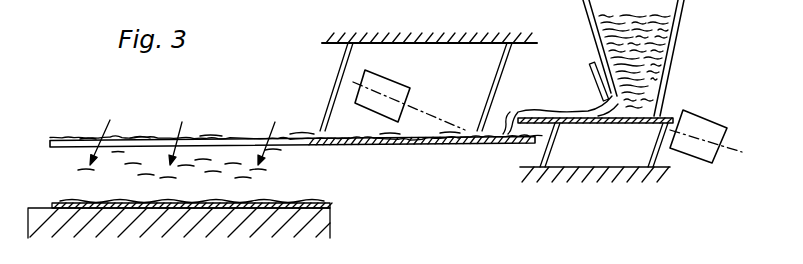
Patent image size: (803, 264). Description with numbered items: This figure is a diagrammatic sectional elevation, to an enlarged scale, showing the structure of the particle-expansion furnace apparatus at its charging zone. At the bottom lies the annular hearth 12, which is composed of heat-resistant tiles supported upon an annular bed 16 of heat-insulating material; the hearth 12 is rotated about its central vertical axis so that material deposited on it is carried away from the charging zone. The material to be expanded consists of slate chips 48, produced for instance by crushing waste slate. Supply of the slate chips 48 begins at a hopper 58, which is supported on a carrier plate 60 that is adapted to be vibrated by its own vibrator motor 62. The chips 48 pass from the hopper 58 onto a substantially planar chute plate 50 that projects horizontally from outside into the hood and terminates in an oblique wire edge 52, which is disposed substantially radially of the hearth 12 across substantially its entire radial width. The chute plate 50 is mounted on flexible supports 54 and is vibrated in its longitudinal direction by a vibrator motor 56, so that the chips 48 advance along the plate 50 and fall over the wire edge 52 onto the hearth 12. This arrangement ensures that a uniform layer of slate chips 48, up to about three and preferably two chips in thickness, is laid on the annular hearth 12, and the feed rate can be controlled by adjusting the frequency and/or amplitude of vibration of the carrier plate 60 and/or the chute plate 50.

The annular hearth 12 is at (328, 198).
The annular bed of heat-insulating material 16 is at (333, 211).
The slate chips 48 is at (133, 133).
The chute plate 50 is at (442, 145).
The oblique wire edge 52 is at (70, 148).
The flexible supports 54 is at (337, 78).
The vibrator motor 56 is at (397, 88).
The hopper 58 is at (678, 28).
The carrier plate 60 is at (575, 125).
The vibrator motor 62 is at (703, 152).